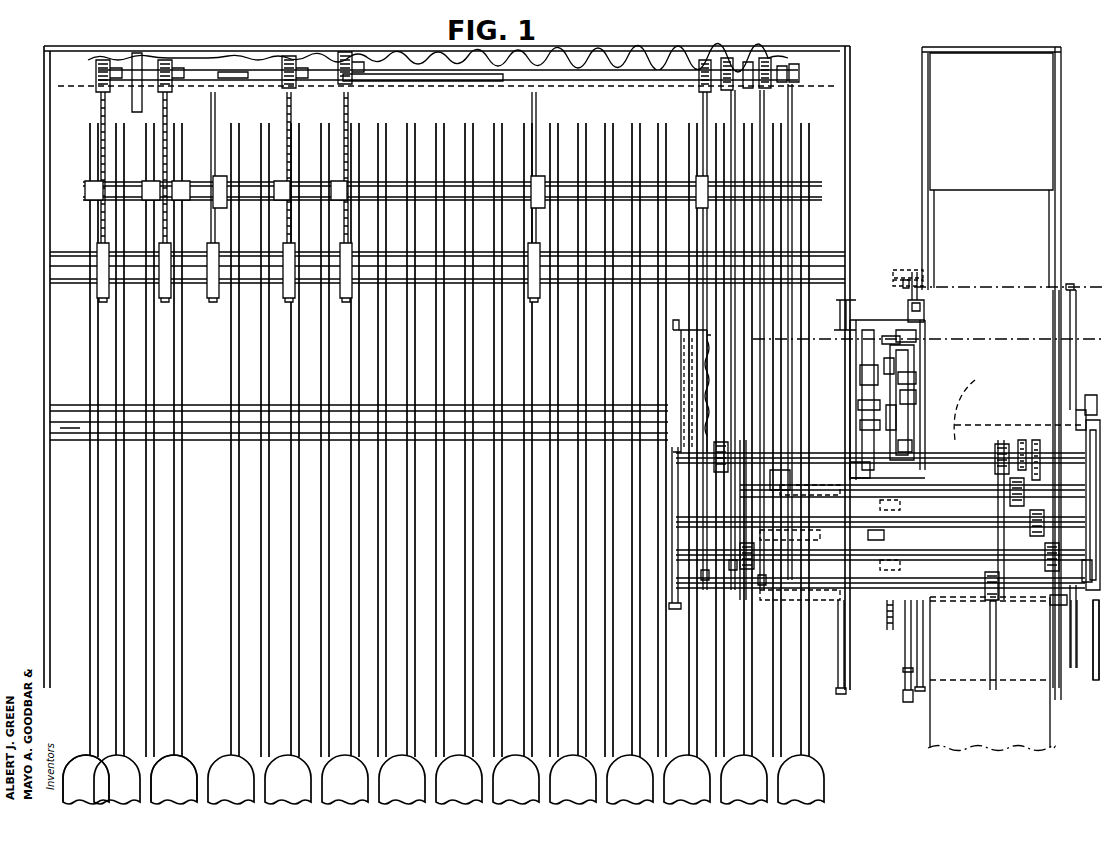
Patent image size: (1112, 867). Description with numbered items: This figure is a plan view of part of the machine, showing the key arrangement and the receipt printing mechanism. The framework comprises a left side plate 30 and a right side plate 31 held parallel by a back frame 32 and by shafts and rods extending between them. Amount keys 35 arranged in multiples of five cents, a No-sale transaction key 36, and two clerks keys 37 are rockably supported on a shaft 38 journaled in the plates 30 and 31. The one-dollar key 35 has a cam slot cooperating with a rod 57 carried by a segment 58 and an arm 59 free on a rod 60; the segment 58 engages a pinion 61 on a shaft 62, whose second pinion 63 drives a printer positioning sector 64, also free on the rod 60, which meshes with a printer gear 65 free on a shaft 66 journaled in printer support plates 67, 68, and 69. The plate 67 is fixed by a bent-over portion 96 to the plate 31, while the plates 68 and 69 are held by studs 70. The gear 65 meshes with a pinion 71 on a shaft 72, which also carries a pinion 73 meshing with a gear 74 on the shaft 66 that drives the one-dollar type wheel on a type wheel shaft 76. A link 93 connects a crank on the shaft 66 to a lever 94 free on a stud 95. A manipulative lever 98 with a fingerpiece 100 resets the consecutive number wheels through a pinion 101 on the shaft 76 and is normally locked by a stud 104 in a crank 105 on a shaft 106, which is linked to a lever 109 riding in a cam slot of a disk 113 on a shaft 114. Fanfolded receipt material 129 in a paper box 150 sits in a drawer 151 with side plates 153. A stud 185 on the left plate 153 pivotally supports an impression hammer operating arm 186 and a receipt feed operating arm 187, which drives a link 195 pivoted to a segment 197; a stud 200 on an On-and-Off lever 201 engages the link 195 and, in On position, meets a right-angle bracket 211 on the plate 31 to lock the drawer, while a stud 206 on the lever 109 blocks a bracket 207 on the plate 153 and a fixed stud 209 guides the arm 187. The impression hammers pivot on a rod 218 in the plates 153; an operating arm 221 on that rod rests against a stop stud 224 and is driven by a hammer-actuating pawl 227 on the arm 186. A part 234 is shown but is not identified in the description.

The left side plate 30 is at (46, 113).
The right side plate 31 is at (851, 62).
The back frame 32 is at (80, 48).
The amount keys 35 is at (226, 762).
The transaction key 36 is at (178, 767).
The department or clerks keys 37 is at (110, 765).
The shaft 38 is at (217, 416).
The rod 57 is at (296, 184).
The segment 58 is at (292, 102).
The arm 59 is at (216, 102).
The rod 60 is at (228, 294).
The pinion 61 is at (289, 50).
The shaft 62 is at (322, 65).
The pinion 63 is at (737, 50).
The printer positioning sector 64 is at (728, 105).
The printer gear 65 is at (710, 540).
The shaft 66 is at (800, 492).
The printer support plate 67 is at (683, 603).
The printer support plate 68 is at (912, 285).
The printer support plate 69 is at (1070, 330).
The studs 70 is at (1066, 293).
The pinion 71 is at (770, 483).
The shaft 72 is at (688, 490).
The pinion 73 is at (1040, 468).
The gear 74 is at (1025, 443).
The type wheel shaft 76 is at (1096, 585).
The link 93 is at (868, 536).
The lever 94 is at (872, 425).
The stud 95 is at (892, 416).
The bent-over portion 96 is at (688, 328).
The manipulative lever 98 is at (1082, 642).
The fingerpiece 100 is at (1094, 640).
The pinion 101 is at (1058, 608).
The stud 104 is at (1094, 420).
The crank 105 is at (1085, 414).
The shaft 106 is at (1088, 394).
The lever 109 is at (855, 348).
The disk 113 is at (860, 330).
The shaft 114 is at (866, 376).
The issuing receipt material 129 is at (935, 717).
The paper box 150 is at (956, 55).
The magazine or drawer 151 is at (1015, 48).
The side plates 153 is at (921, 96).
The stud 185 is at (918, 398).
The impression hammer operating arm 186 is at (888, 342).
The receipt feed operating arm 187 is at (890, 338).
The link 195 is at (905, 448).
The segment 197 is at (888, 610).
The stud 200 is at (920, 478).
The On-and-Off lever 201 is at (906, 688).
The stud 206 is at (895, 288).
The bracket 207 is at (888, 284).
The fixed stud 209 is at (922, 318).
The right-angle bracket 211 is at (860, 466).
The rod 218 is at (968, 418).
The operating arm 221 is at (896, 365).
The stop stud 224 is at (916, 380).
The hammer-actuating pawl 227 is at (915, 336).
The plate 234 is at (916, 350).